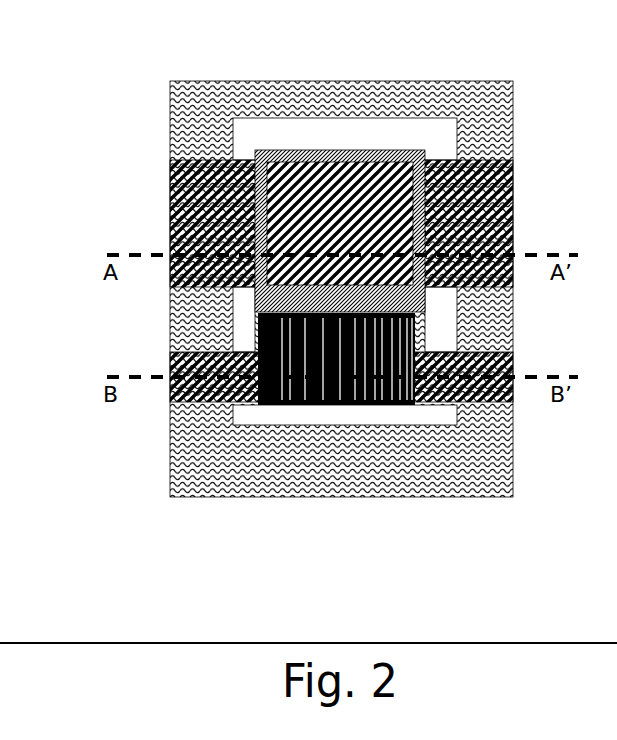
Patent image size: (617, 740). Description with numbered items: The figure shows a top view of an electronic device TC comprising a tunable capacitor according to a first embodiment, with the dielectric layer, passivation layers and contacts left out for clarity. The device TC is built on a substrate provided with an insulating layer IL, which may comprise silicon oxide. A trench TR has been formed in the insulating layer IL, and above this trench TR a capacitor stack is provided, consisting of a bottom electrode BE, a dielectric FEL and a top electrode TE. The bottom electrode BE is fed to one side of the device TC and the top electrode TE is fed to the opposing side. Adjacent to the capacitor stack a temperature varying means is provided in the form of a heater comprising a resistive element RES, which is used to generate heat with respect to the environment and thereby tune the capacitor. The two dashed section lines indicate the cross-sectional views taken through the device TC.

The electronic device TC is at (294, 286).
The trench TR is at (300, 135).
The dielectric FEL is at (367, 157).
The top electrode TE is at (353, 238).
The bottom electrode BE is at (203, 212).
The insulating layer IL is at (220, 472).
The resistive element RES is at (390, 402).